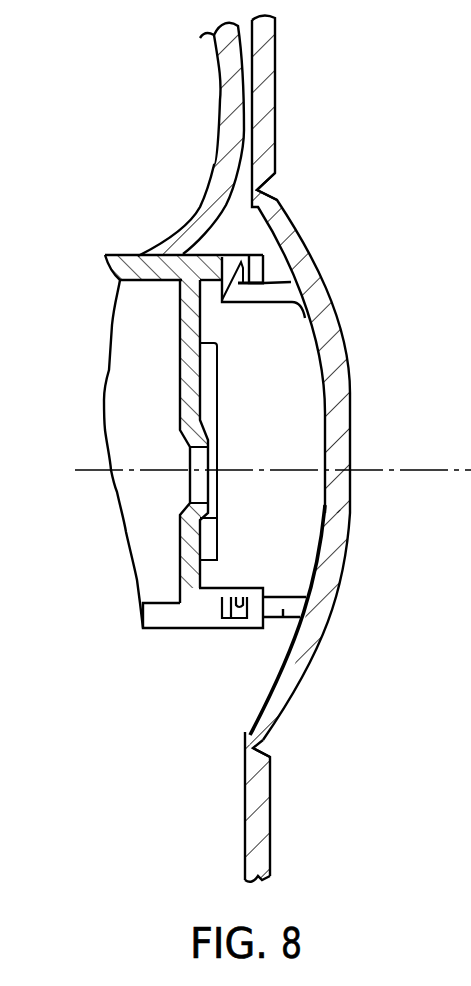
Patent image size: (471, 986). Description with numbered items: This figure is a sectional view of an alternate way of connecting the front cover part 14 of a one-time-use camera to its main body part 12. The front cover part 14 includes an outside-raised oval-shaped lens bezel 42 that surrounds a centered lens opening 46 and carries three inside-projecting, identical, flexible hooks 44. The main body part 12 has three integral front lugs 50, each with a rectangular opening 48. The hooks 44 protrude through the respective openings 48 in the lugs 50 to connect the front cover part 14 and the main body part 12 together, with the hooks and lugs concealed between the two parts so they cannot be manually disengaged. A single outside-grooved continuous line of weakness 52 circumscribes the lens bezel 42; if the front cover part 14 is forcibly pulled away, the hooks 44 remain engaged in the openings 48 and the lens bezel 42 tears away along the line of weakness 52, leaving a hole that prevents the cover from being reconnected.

The main body part 12 is at (118, 252).
The front cover part 14 is at (271, 810).
The lens bezel 42 is at (292, 688).
The flexible hooks 44 is at (257, 292).
The lens opening 46 is at (338, 497).
The rectangular openings 48 is at (227, 252).
The front lugs 50 is at (181, 255).
The line of weakness 52 is at (278, 192).